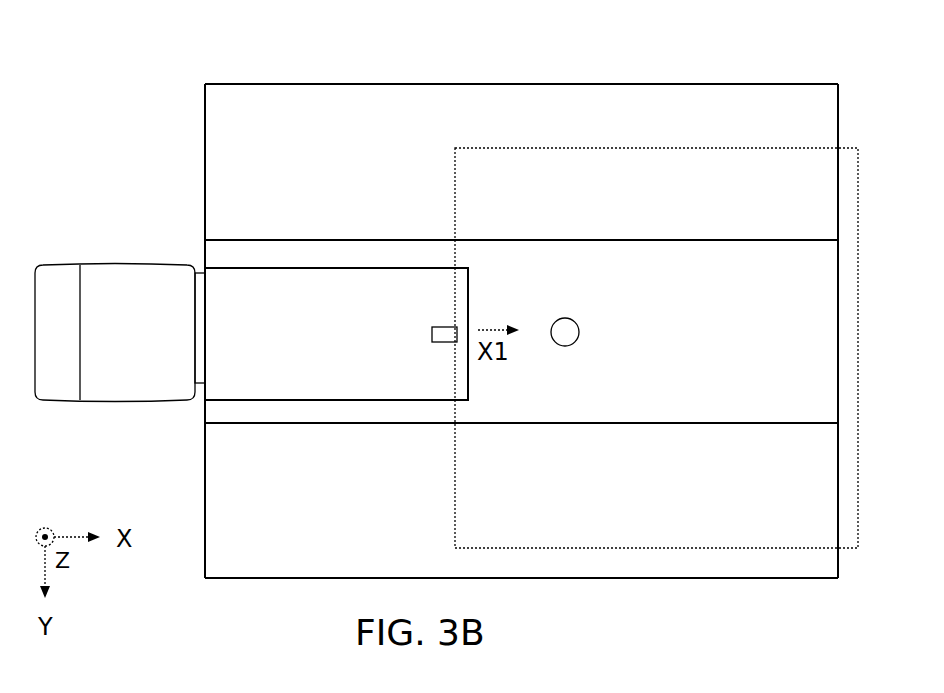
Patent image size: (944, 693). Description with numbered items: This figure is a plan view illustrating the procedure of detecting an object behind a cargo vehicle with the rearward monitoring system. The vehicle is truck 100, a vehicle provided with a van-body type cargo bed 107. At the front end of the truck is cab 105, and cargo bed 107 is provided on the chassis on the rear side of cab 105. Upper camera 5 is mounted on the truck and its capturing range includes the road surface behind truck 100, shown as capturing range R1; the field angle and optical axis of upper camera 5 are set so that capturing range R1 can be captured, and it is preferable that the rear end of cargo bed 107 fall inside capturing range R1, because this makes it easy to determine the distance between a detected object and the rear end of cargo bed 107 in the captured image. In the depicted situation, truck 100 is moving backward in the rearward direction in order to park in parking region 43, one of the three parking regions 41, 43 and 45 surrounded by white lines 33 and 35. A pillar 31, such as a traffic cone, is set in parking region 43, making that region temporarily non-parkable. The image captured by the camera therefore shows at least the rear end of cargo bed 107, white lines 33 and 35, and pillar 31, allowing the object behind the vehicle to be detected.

The upper camera 5 is at (445, 343).
The pillar 31 is at (566, 318).
The white line 33 is at (437, 84).
The white line 35 is at (205, 178).
The parking region 41 is at (281, 128).
The parking region 43 is at (698, 256).
The parking region 45 is at (240, 456).
The truck 100 is at (160, 262).
The cab 105 is at (72, 265).
The cargo bed 107 is at (258, 283).
The capturing range R1 is at (538, 148).